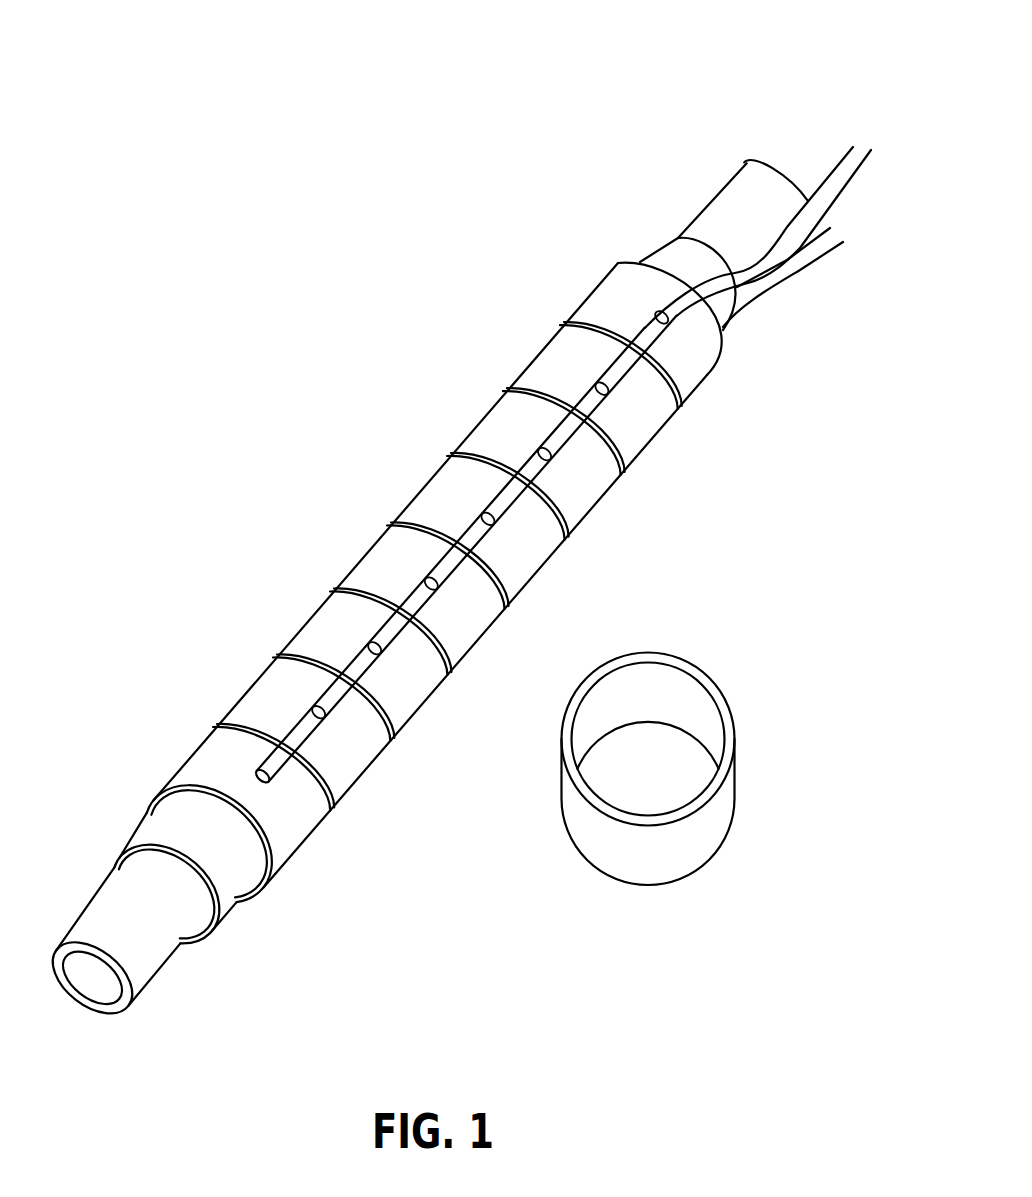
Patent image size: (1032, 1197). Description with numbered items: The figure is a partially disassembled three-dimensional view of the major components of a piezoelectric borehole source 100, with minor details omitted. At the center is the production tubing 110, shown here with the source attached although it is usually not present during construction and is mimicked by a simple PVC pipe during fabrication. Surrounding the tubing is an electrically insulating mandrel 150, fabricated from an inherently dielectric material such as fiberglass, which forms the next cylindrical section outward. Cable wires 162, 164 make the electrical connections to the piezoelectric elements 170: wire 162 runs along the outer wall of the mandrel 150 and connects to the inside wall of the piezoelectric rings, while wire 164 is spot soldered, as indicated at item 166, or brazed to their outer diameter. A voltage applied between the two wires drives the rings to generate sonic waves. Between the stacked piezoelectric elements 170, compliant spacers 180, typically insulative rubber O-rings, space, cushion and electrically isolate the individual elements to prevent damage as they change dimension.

The piezoelectric borehole source 100 is at (300, 450).
The production tubing 110 is at (135, 960).
The electrically insulating mandrel 150 is at (227, 910).
The cable wire 162 is at (842, 242).
The cable wire 164 is at (858, 147).
The spot solder 166 is at (351, 663).
The piezoelectric elements 170 is at (528, 590).
The compliant spacer 180 is at (380, 757).